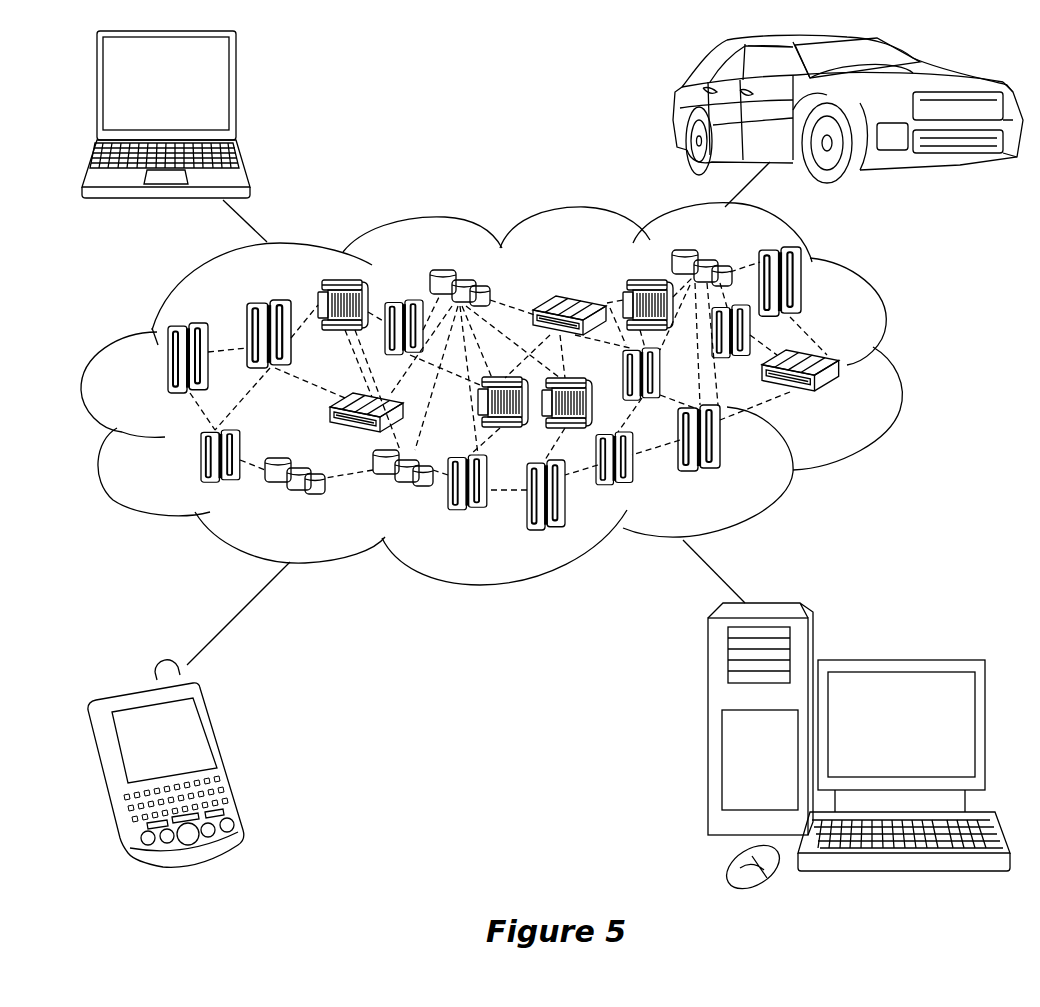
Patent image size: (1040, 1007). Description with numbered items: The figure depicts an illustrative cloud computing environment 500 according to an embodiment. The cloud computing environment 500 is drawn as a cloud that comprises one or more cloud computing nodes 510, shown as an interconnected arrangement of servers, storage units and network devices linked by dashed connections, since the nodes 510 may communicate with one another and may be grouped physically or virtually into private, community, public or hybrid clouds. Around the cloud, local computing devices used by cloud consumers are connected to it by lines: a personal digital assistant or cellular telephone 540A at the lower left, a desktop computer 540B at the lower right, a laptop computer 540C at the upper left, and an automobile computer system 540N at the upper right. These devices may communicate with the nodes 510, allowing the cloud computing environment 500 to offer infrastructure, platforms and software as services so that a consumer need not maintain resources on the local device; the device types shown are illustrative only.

The cloud computing environment 500 is at (880, 368).
The cloud computing nodes 510 is at (846, 398).
The personal digital assistant (PDA) or cellular telephone 540A is at (225, 757).
The desktop computer 540B is at (900, 660).
The laptop computer 540C is at (236, 92).
The automobile computer system 540N is at (680, 108).